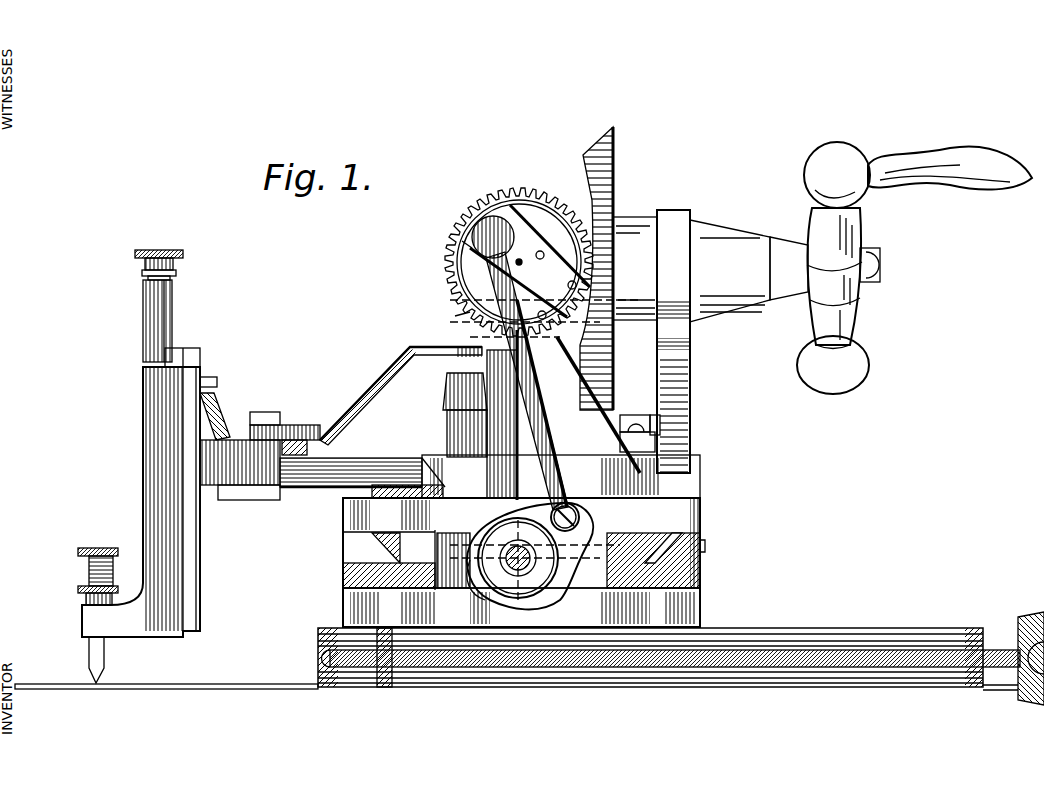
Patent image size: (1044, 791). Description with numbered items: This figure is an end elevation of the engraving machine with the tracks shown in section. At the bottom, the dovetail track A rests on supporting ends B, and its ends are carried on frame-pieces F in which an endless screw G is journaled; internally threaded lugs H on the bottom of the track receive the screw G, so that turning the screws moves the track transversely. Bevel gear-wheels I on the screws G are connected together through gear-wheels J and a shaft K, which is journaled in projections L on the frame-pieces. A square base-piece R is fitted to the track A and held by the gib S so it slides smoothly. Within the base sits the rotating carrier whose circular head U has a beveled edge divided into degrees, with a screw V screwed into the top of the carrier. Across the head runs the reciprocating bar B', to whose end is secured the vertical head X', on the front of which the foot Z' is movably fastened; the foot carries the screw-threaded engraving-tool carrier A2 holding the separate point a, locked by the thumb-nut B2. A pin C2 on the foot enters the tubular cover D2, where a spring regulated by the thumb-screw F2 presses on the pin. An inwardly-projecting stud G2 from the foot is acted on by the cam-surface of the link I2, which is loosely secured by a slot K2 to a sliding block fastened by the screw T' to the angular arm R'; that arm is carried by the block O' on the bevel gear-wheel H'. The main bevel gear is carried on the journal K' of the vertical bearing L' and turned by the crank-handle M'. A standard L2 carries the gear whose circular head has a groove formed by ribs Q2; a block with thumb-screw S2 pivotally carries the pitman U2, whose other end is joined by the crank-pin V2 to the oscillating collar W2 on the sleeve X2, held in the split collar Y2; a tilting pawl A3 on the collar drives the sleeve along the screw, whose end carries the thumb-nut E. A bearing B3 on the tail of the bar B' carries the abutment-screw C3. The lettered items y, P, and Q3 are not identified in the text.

The vertical head X' is at (179, 502).
The foot Z' is at (129, 477).
The point a is at (105, 682).
The engraving-tool carrier A2 is at (90, 568).
The thumb-nut B2 is at (88, 596).
The cap block y is at (180, 350).
The pin C2 is at (150, 367).
The tubular cover D2 is at (144, 328).
The thumb-screw F2 is at (168, 252).
The stud G2 is at (218, 382).
The link I2 is at (218, 420).
The screw T' is at (265, 403).
The slot K2 is at (246, 442).
The angular arm R' is at (389, 396).
The screw V is at (242, 462).
The reciprocating bar B' is at (362, 482).
The circular head U is at (442, 490).
The bevel gear-wheel H' is at (447, 391).
The thumb-nut E is at (455, 438).
The standard L2 is at (500, 400).
The block O' is at (519, 262).
The gear center P is at (524, 273).
The thumb-screw S2 is at (494, 216).
The ribs Q2 is at (522, 210).
The bar end Q3 is at (465, 240).
The pitman U2 is at (456, 316).
The tilting pawl A3 is at (505, 595).
The gear-wheels J is at (614, 140).
The bearing B3 is at (632, 434).
The journal K' is at (710, 248).
The vertical bearing L' is at (683, 341).
The abutment-screw C3 is at (692, 420).
The crank-handle M' is at (914, 262).
The dovetail track A is at (700, 582).
The square base-piece R is at (710, 543).
The gib S is at (705, 546).
The supporting ends B is at (517, 607).
The oscillating collar W2 is at (522, 600).
The sleeve X2 is at (530, 605).
The crank-pin V2 is at (568, 628).
The split collar Y2 is at (465, 565).
The frame-pieces F is at (822, 630).
The endless screw G is at (905, 668).
The lugs H is at (380, 670).
The bevel gear-wheels I is at (1026, 620).
The projections L is at (1000, 696).
The shaft K is at (1034, 686).